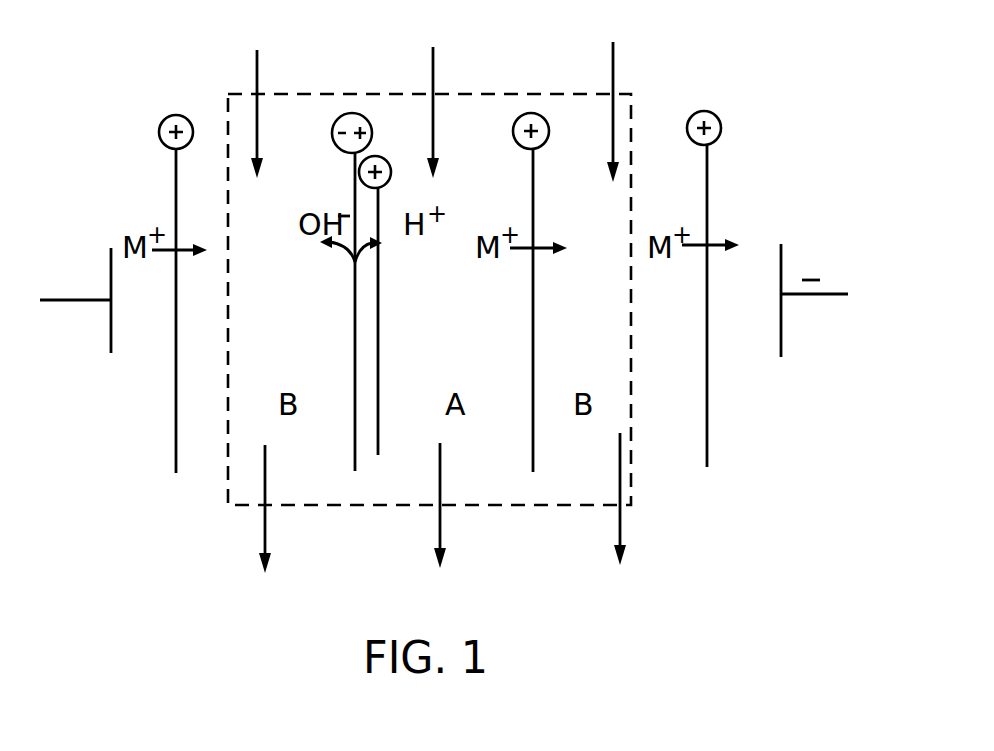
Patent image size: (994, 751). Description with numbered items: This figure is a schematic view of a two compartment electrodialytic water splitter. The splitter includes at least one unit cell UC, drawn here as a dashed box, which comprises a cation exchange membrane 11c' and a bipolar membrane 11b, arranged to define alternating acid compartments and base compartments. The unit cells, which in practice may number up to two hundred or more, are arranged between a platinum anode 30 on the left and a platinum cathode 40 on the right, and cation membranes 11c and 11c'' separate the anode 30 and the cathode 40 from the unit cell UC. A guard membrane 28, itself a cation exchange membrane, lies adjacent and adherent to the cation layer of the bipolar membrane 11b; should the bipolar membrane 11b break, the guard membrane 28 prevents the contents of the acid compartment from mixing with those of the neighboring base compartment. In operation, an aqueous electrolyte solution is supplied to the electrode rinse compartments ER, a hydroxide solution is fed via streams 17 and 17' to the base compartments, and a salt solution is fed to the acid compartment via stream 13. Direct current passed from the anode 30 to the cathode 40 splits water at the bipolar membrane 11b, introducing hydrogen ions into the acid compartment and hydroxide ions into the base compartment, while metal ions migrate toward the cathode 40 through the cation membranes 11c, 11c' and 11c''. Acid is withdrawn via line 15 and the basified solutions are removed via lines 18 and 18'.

The unit cell UC is at (627, 82).
The stream 17 is at (233, 110).
The stream 13 is at (432, 70).
The stream 17' is at (592, 112).
The line 18 is at (242, 509).
The line 15 is at (437, 543).
The line 18' is at (597, 499).
The anode 30 is at (110, 268).
The cathode 40 is at (785, 282).
The electrode rinse compartment ER is at (135, 348).
The cation exchange membrane 11c is at (169, 294).
The cation exchange membrane 11c' is at (523, 292).
The cation exchange membrane 11c'' is at (697, 289).
The bipolar membrane 11b is at (355, 404).
The guard membrane 28 is at (380, 346).